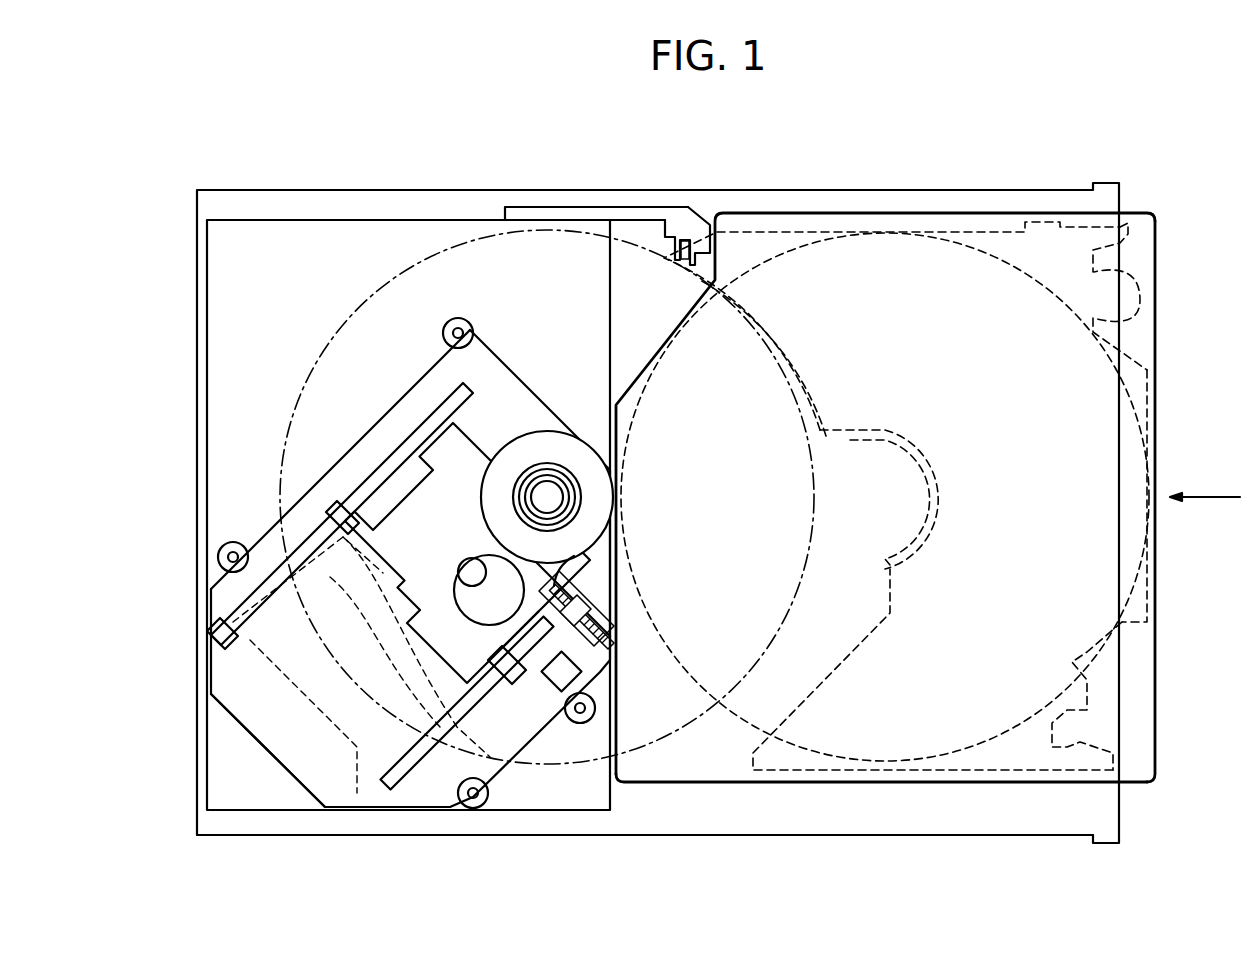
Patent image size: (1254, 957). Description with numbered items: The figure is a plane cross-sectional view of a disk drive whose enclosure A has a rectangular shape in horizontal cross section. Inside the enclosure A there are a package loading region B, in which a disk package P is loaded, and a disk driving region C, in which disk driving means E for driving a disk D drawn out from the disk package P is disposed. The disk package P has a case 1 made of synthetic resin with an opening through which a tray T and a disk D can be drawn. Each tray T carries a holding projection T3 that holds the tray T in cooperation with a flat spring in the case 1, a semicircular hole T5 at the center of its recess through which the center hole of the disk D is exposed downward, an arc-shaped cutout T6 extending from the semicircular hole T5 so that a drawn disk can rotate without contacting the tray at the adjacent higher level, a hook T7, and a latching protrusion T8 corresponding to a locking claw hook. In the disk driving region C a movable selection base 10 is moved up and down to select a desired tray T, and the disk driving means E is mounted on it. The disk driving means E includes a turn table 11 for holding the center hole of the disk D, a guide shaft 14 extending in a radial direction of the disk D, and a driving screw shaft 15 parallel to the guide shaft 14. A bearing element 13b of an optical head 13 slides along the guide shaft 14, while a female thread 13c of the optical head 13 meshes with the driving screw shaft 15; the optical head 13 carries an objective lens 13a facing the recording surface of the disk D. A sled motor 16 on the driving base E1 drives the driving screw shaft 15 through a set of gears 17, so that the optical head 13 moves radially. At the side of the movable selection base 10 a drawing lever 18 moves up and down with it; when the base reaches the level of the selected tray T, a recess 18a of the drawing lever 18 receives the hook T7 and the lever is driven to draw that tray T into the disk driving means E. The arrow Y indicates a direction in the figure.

The movable selection base 10 is at (270, 212).
The drawing lever 18 is at (596, 206).
The recess of the drawing lever 18a is at (694, 238).
The hook T7 is at (683, 256).
The case 1 is at (1160, 335).
The disk package P is at (1145, 670).
The package loading region B is at (833, 818).
The enclosure A is at (707, 842).
The disk driving region C is at (420, 826).
The tray T is at (1160, 393).
The holding projection T3 is at (1150, 290).
The semicircular hole T5 is at (935, 496).
The arc-shaped cutout T6 is at (769, 352).
The latching protrusion T8 is at (1100, 745).
The disk D is at (340, 315).
The disk driving means E is at (297, 483).
The driving base E1 is at (245, 698).
The optical head 13 is at (462, 446).
The objective lens 13a is at (471, 573).
The bearing element 13b is at (338, 507).
The female thread 13c is at (514, 668).
The guide shaft 14 is at (225, 626).
The driving screw shaft 15 is at (415, 752).
The sled motor 16 is at (588, 668).
The set of gears 17 is at (600, 620).
The turn table 11 is at (542, 447).
The insertion direction Y is at (957, 808).